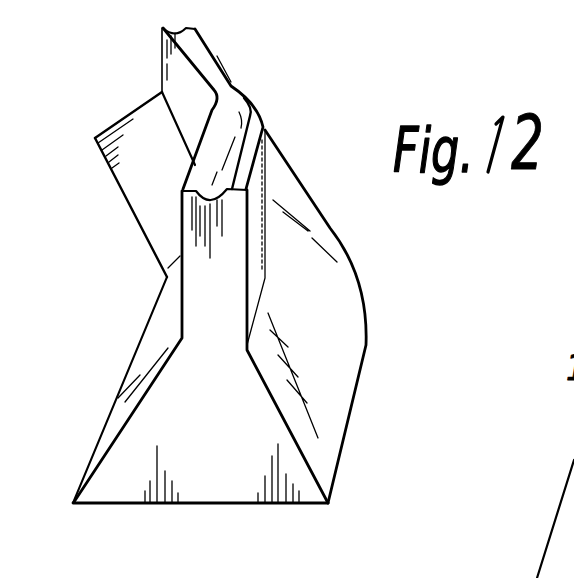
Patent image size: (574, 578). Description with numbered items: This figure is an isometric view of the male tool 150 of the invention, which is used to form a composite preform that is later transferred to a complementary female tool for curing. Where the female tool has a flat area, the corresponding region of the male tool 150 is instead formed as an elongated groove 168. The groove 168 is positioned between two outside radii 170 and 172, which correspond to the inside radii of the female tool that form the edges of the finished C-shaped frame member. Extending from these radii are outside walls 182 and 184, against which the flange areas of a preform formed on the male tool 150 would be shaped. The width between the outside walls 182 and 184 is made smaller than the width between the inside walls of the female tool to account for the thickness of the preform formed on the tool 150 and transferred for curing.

The male tool 150 is at (126, 257).
The elongated groove 168 is at (238, 117).
The outside radius 170 is at (262, 130).
The outside radius 172 is at (203, 148).
The outside wall 182 is at (247, 237).
The outside wall 184 is at (200, 268).